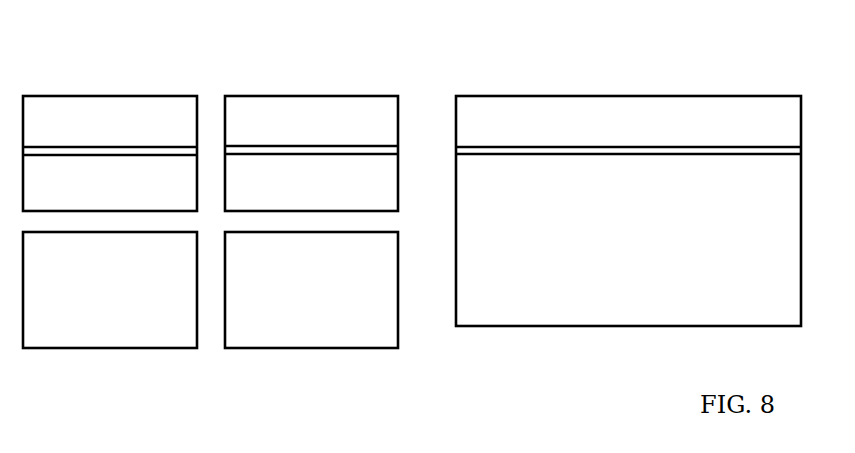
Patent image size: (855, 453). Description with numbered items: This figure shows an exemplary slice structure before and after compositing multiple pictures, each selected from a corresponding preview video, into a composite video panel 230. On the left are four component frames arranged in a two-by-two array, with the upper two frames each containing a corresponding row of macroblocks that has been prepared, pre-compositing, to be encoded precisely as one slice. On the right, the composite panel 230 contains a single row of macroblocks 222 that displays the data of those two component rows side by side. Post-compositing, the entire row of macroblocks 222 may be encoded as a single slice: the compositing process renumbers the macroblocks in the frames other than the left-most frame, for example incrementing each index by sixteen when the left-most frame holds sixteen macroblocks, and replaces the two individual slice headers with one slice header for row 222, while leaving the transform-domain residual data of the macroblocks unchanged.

The composite video panel 230 is at (627, 326).
The row of macroblocks 222 is at (717, 146).